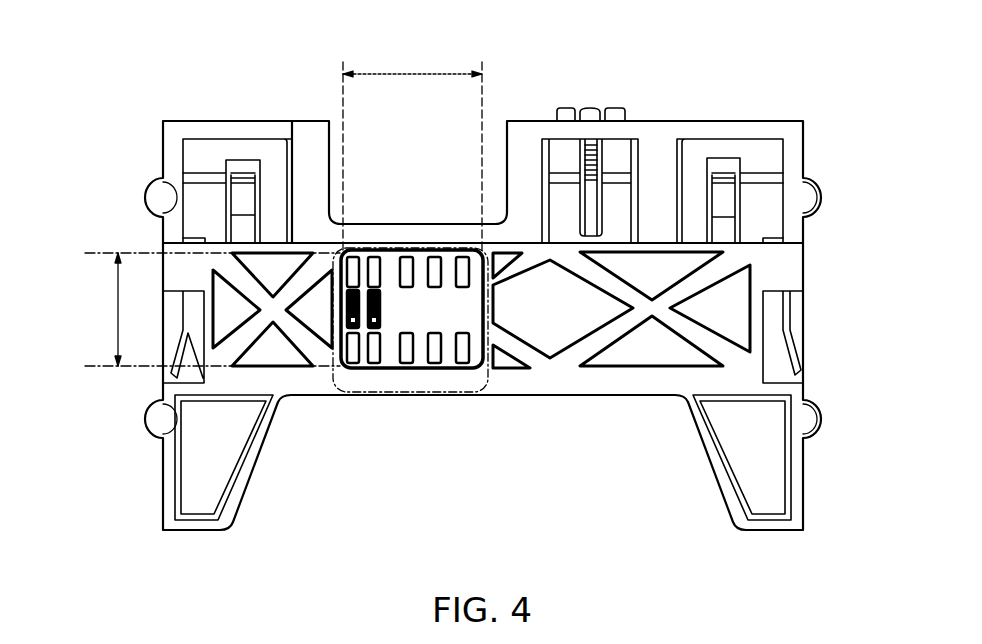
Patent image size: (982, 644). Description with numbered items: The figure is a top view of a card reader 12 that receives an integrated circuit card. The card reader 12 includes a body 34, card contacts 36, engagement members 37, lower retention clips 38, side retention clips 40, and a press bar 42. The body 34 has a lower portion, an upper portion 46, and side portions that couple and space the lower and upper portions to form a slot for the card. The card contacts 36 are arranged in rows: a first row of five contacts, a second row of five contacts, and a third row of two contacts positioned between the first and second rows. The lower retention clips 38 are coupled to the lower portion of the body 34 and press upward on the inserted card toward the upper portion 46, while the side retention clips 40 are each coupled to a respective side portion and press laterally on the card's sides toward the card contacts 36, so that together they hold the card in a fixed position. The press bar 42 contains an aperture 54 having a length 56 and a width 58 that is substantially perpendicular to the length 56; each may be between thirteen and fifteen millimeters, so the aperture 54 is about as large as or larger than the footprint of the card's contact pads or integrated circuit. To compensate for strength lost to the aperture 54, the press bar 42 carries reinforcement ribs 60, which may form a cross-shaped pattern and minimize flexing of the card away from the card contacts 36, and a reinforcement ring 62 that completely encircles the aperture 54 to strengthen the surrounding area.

The card reader 12 is at (117, 115).
The body 34 is at (793, 147).
The card contacts 36 is at (438, 250).
The engagement members 37 is at (148, 200).
The lower retention clips 38 is at (243, 195).
The side retention clips 40 is at (170, 318).
The press bar 42 is at (567, 250).
The upper portion 46 is at (315, 145).
The aperture 54 is at (392, 302).
The length 56 is at (427, 72).
The width 58 is at (116, 310).
The reinforcement ribs 60 is at (248, 330).
The reinforcement ring 62 is at (373, 377).